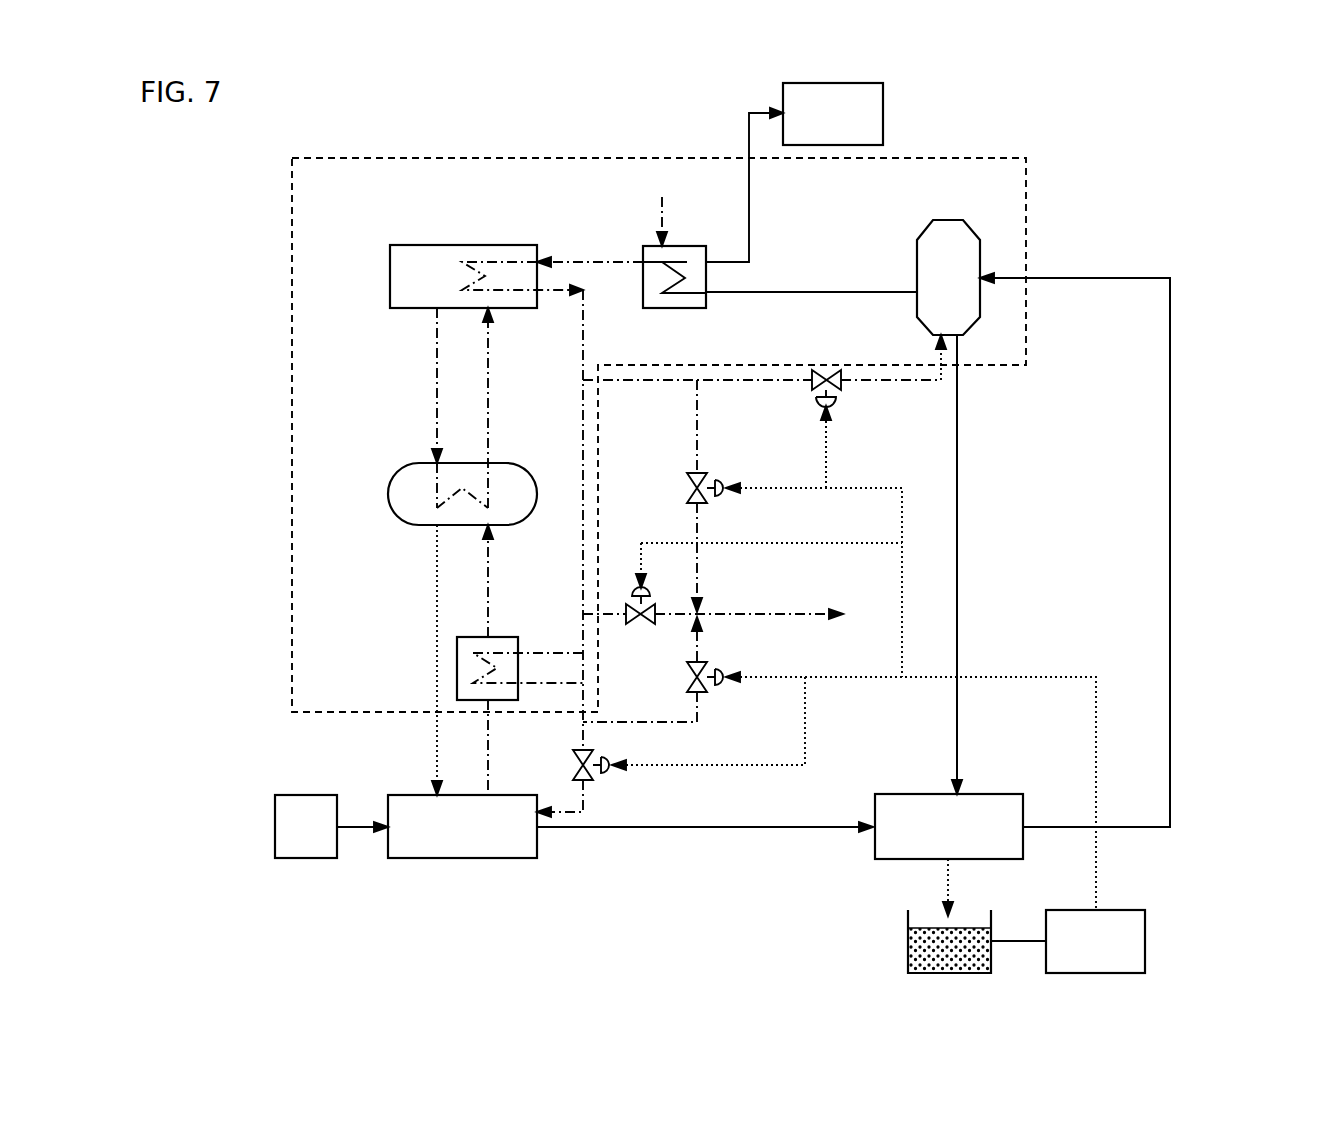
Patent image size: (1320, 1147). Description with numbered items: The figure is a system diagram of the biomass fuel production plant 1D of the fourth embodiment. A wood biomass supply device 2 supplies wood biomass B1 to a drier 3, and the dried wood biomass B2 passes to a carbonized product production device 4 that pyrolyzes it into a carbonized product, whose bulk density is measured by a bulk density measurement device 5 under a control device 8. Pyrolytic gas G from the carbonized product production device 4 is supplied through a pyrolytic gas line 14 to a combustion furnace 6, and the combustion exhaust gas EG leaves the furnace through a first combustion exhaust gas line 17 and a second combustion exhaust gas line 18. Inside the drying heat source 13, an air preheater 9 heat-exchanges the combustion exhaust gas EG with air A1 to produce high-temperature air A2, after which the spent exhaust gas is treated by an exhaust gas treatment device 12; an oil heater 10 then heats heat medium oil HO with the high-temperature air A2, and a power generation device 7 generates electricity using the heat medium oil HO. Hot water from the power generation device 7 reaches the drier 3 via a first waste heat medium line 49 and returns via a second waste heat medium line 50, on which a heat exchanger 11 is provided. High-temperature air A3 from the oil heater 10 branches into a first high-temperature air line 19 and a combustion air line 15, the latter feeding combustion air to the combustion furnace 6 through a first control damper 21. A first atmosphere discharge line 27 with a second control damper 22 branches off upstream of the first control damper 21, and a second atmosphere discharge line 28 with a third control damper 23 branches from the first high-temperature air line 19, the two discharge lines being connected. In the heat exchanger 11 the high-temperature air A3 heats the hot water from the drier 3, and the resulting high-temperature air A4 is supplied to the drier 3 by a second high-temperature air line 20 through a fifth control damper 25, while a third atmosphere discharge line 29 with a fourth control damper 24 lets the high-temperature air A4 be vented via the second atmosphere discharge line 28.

The biomass fuel production plant 1D is at (1182, 146).
The wood biomass supply device 2 is at (305, 795).
The drier 3 is at (462, 858).
The carbonized product production device 4 is at (980, 794).
The bulk density measurement device 5 is at (908, 948).
The combustion furnace 6 is at (942, 220).
The power generation device 7 is at (388, 490).
The control device 8 is at (1145, 940).
The air preheater 9 is at (689, 246).
The oil heater 10 is at (437, 245).
The heat exchanger 11 is at (457, 664).
The exhaust gas treatment device 12 is at (883, 113).
The drying heat source 13 is at (292, 325).
The pyrolytic gas line 14 is at (1170, 478).
The combustion air line 15 is at (748, 380).
The first combustion exhaust gas line 17 is at (862, 292).
The second combustion exhaust gas line 18 is at (957, 508).
The first high-temperature air line 19 is at (583, 455).
The second high-temperature air line 20 is at (550, 686).
The first control damper 21 is at (836, 406).
The second control damper 22 is at (722, 497).
The third control damper 23 is at (633, 588).
The fourth control damper 24 is at (722, 686).
The fifth control damper 25 is at (612, 773).
The first atmosphere discharge line 27 is at (697, 420).
The second atmosphere discharge line 28 is at (773, 612).
The third atmosphere discharge line 29 is at (657, 721).
The first waste heat medium line 49 is at (437, 581).
The second waste heat medium line 50 is at (488, 592).
The heat medium oil HO is at (437, 372).
The air A1 is at (659, 205).
The high-temperature air A2 is at (567, 262).
The high-temperature air A3 is at (583, 340).
The high-temperature air A4 is at (550, 684).
The combustion exhaust gas EG is at (790, 292).
The pyrolytic gas G is at (1170, 547).
The wood biomass B1 is at (352, 830).
The wood biomass B2 is at (693, 828).